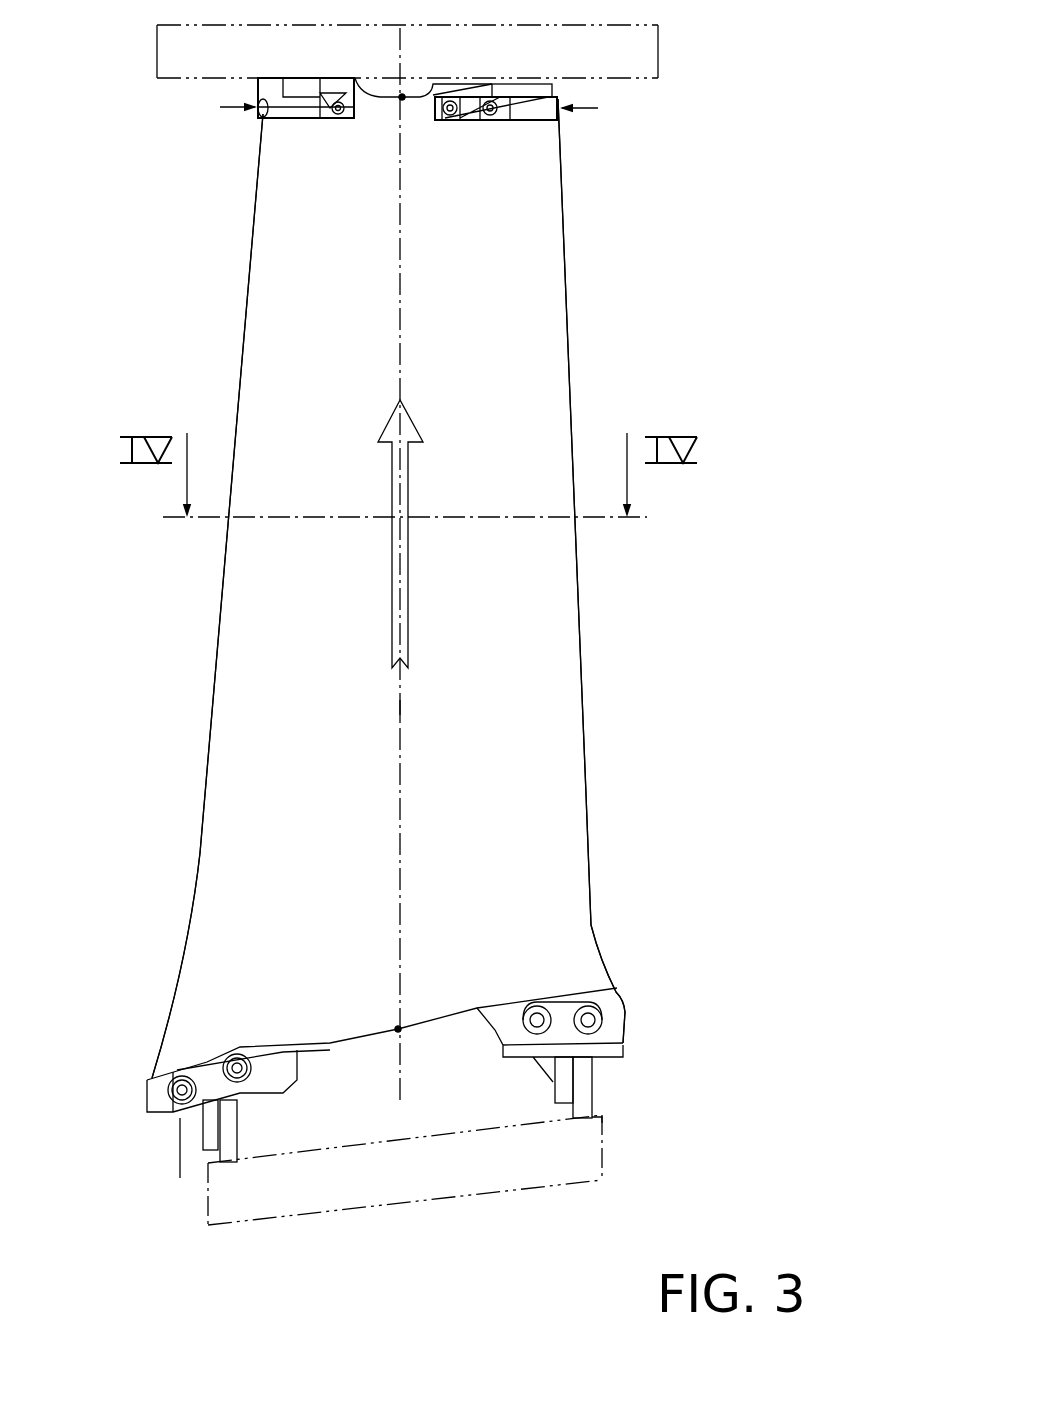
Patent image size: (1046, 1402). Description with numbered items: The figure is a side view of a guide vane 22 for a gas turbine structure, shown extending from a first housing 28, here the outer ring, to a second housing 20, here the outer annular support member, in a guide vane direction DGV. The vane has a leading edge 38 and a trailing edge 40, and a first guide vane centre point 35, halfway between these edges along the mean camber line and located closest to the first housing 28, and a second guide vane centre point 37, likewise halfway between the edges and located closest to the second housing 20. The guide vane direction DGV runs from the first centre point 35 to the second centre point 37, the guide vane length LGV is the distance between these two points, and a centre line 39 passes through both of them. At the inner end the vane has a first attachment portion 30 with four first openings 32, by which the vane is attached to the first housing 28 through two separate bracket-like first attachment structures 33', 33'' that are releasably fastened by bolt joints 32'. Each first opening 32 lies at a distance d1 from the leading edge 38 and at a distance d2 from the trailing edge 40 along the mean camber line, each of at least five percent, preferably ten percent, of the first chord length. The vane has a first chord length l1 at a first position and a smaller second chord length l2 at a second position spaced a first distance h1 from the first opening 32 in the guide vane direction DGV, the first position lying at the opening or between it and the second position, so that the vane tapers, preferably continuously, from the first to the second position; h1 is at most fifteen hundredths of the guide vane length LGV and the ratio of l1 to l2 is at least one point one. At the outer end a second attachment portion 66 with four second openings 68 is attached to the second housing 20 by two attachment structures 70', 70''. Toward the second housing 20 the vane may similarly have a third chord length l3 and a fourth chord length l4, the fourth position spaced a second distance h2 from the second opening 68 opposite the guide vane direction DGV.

The second housing 20 is at (462, 62).
The guide vane 22 is at (650, 372).
The first housing 28 is at (437, 1212).
The first attachment portion 30 is at (309, 1074).
The first opening 32 is at (367, 978).
The bolt joint 32' is at (392, 1058).
The first attachment structure 33' is at (181, 1052).
The first attachment structure 33'' is at (640, 1065).
The first guide vane centre point 35 is at (415, 1042).
The second guide vane centre point 37 is at (417, 111).
The leading edge 38 is at (213, 627).
The centre line 39 is at (400, 710).
The trailing edge 40 is at (586, 652).
The second attachment portion 66 is at (489, 162).
The second opening 68 is at (338, 120).
The attachment structure 70' is at (231, 106).
The attachment structure 70'' is at (557, 133).
The first distance h1 is at (586, 794).
The second distance h2 is at (300, 110).
The first chord length l1 is at (144, 993).
The second chord length l2 is at (202, 853).
The third chord length l3 is at (385, 112).
The fourth chord length l4 is at (259, 243).
The distance from leading edge d1 is at (190, 1017).
The distance from trailing edge d2 is at (557, 963).
The guide vane direction DGV is at (412, 598).
The guide vane length LGV is at (560, 99).